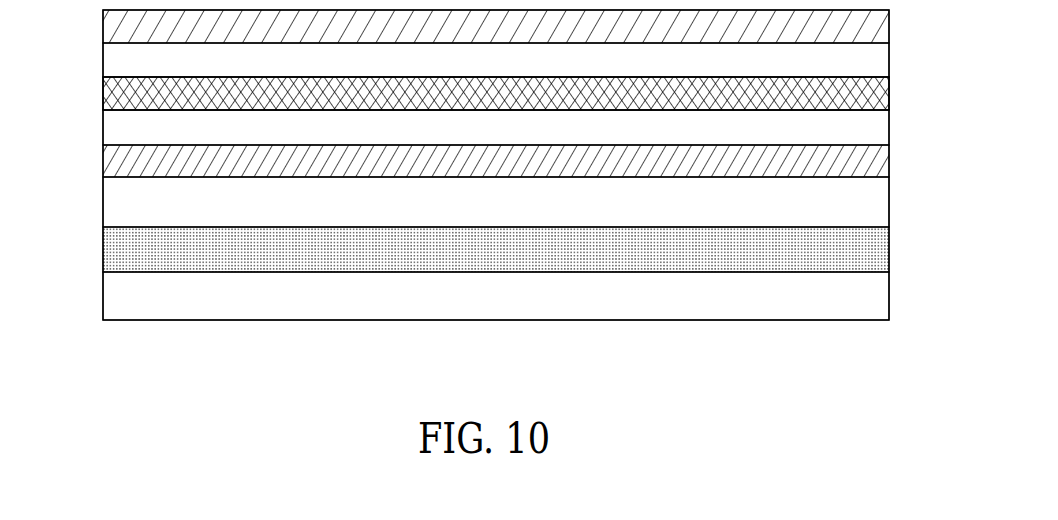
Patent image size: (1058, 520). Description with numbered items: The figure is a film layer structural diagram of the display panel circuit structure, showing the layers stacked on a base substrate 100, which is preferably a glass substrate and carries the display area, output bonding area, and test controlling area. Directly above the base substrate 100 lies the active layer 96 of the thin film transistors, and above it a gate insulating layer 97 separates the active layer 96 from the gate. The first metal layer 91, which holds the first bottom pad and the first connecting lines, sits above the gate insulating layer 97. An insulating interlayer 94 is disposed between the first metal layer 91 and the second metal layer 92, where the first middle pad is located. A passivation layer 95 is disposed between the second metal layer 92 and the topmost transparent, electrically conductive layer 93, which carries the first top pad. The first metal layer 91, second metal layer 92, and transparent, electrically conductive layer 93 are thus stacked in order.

The transparent, electrically conductive layer 93 is at (845, 25).
The passivation layer 95 is at (132, 55).
The second metal layer 92 is at (848, 100).
The insulating interlayer 94 is at (142, 135).
The first metal layer 91 is at (852, 163).
The gate insulating layer 97 is at (845, 213).
The active layer 96 is at (845, 260).
The base substrate 100 is at (845, 312).